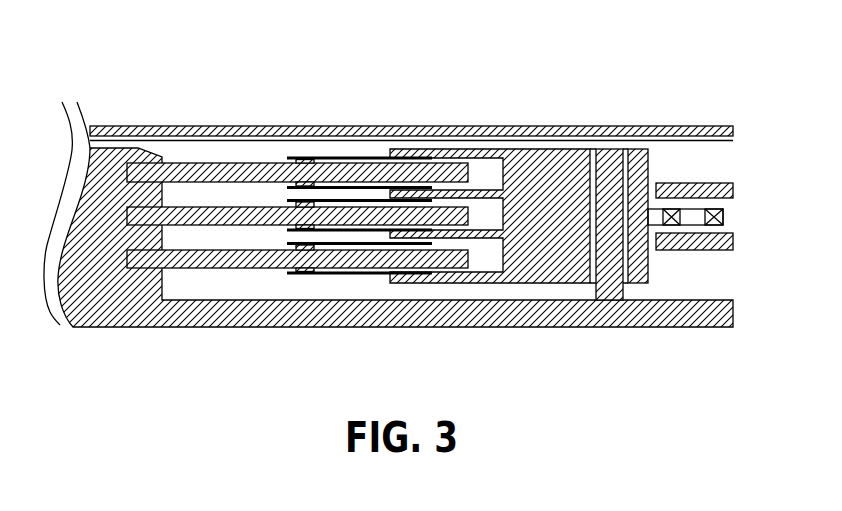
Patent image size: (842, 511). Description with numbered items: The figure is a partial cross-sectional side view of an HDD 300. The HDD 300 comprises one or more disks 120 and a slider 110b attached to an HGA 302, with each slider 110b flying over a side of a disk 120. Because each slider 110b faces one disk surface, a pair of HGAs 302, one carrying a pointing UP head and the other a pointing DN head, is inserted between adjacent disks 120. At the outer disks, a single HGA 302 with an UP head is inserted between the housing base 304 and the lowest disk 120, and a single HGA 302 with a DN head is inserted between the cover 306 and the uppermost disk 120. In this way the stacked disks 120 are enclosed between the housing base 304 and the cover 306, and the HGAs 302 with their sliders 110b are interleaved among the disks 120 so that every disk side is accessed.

The HDD 300 is at (219, 36).
The HGA 302 is at (357, 197).
The housing base 304 is at (620, 318).
The cover 306 is at (590, 126).
The slider 110b is at (287, 201).
The disk 120 is at (212, 182).